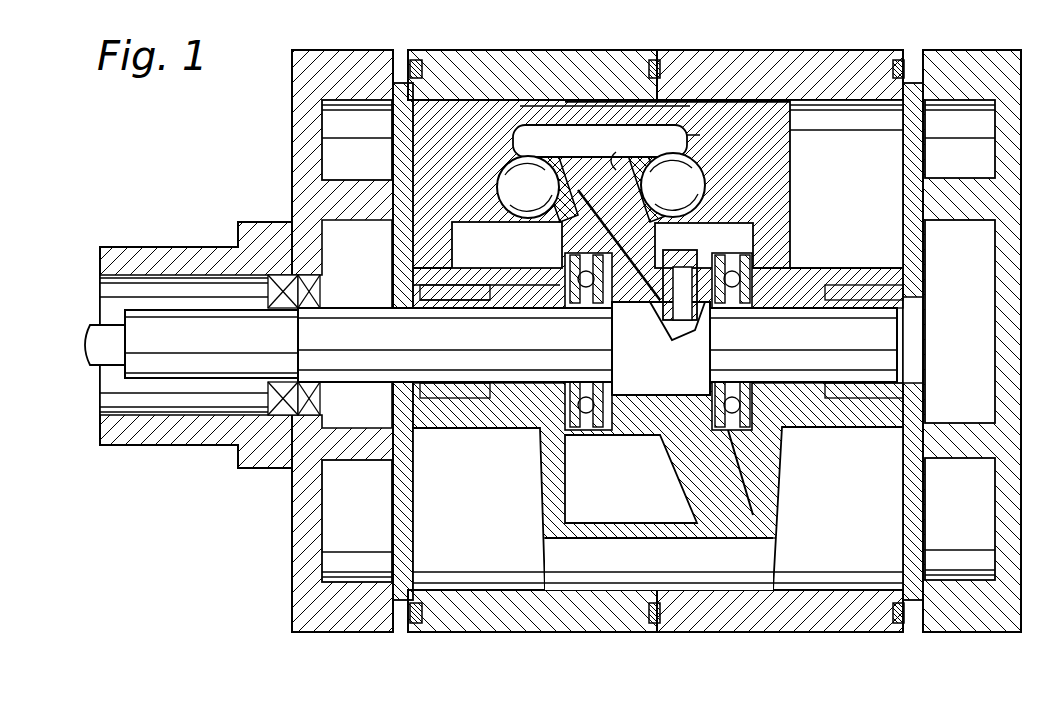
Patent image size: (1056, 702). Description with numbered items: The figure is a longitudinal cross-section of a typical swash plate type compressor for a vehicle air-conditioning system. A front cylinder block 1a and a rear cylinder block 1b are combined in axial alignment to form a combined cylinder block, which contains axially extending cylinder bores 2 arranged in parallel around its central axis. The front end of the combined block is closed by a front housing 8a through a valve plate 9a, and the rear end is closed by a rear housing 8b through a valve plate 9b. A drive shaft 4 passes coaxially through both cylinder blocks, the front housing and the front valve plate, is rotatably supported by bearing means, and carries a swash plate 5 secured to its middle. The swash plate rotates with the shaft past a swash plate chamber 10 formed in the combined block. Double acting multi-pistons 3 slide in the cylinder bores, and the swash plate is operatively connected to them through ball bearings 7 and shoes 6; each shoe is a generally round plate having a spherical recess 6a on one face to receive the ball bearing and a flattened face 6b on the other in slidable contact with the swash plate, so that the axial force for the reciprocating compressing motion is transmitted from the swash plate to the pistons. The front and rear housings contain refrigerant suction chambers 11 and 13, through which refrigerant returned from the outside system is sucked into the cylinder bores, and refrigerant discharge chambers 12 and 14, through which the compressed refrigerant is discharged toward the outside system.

The front cylinder block 1a is at (607, 72).
The rear cylinder block 1b is at (795, 72).
The cylinder bores 2 is at (480, 228).
The double acting multi-pistons 3 is at (780, 135).
The drive shaft 4 is at (190, 355).
The swash plate 5 is at (745, 505).
The shoes 6 is at (543, 165).
The spherical recess 6a is at (548, 162).
The flattened face 6b is at (616, 158).
The ball bearings 7 is at (705, 145).
The front housing 8a is at (332, 78).
The rear housing 8b is at (968, 75).
The front valve plate 9a is at (400, 88).
The rear valve plate 9b is at (915, 90).
The swash plate chamber 10 is at (590, 500).
The refrigerant suction chamber 11 is at (345, 253).
The refrigerant discharge chamber 12 is at (332, 140).
The refrigerant suction chamber 13 is at (975, 285).
The refrigerant discharge chamber 14 is at (975, 138).